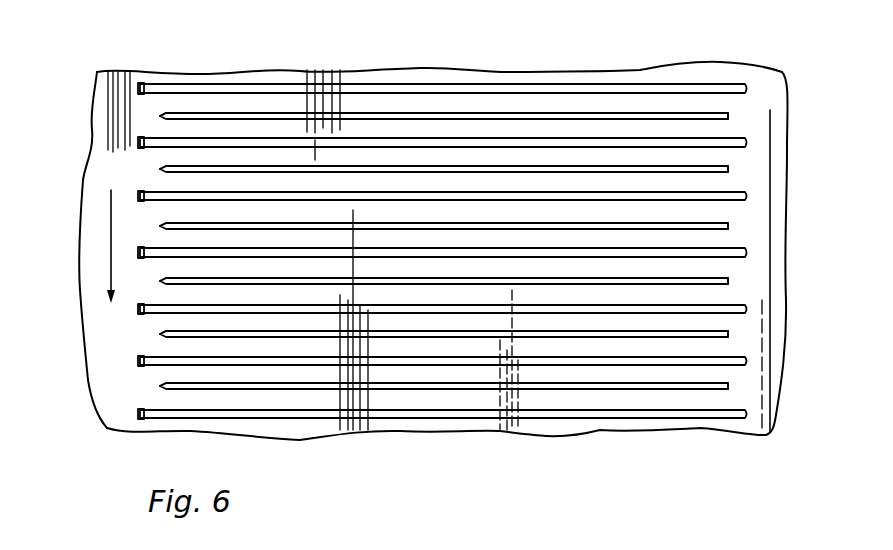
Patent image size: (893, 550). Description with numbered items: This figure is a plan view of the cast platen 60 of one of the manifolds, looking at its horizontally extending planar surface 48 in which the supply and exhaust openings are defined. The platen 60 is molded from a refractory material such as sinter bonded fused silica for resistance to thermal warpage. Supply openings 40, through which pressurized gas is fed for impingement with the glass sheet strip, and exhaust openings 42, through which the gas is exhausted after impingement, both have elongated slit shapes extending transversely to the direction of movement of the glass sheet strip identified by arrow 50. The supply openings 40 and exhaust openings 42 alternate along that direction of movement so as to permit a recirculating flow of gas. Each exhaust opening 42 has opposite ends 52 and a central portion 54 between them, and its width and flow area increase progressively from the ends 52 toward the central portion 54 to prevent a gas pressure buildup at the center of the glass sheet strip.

The supply openings 40 is at (517, 193).
The exhaust openings 42 is at (447, 223).
The planar surface 48 is at (637, 72).
The arrow 50 is at (111, 232).
The opposite ends 52 is at (160, 169).
The central portion 54 is at (430, 227).
The cast platen 60 is at (184, 71).